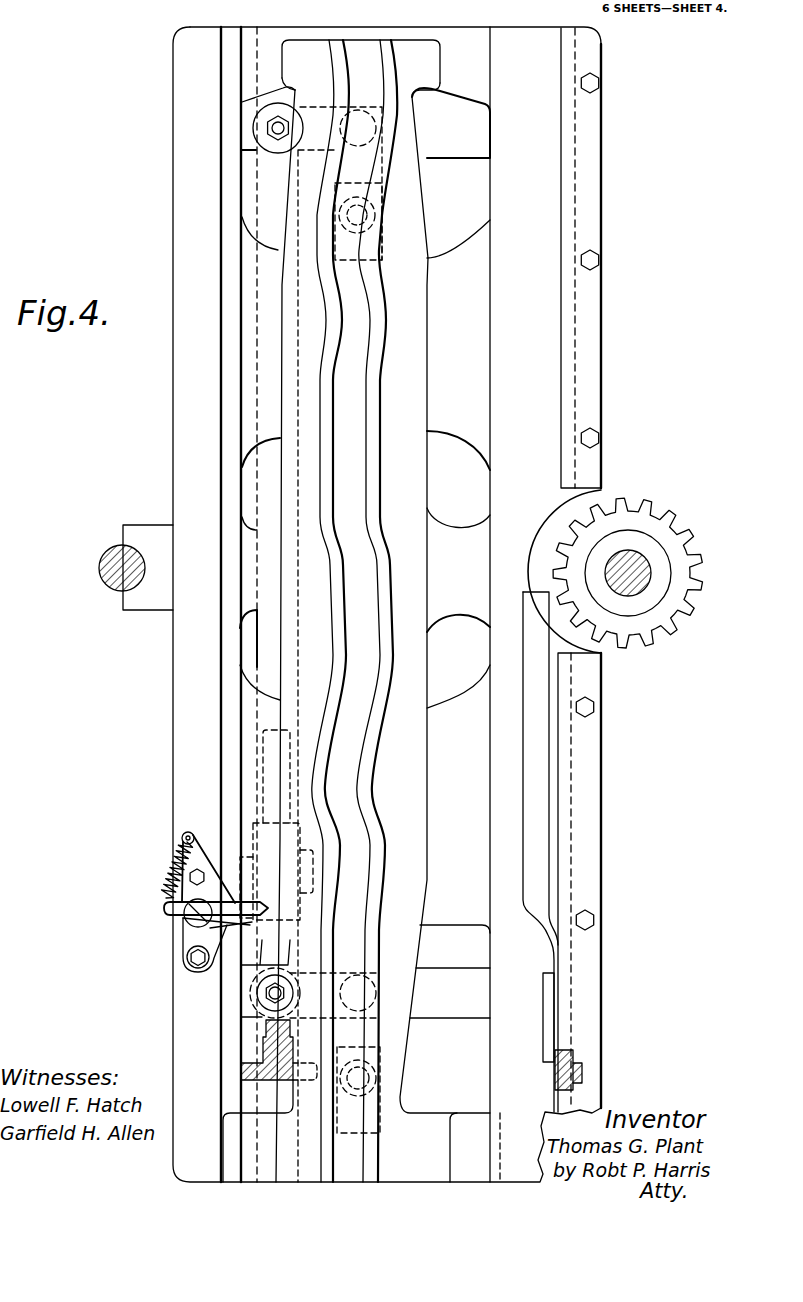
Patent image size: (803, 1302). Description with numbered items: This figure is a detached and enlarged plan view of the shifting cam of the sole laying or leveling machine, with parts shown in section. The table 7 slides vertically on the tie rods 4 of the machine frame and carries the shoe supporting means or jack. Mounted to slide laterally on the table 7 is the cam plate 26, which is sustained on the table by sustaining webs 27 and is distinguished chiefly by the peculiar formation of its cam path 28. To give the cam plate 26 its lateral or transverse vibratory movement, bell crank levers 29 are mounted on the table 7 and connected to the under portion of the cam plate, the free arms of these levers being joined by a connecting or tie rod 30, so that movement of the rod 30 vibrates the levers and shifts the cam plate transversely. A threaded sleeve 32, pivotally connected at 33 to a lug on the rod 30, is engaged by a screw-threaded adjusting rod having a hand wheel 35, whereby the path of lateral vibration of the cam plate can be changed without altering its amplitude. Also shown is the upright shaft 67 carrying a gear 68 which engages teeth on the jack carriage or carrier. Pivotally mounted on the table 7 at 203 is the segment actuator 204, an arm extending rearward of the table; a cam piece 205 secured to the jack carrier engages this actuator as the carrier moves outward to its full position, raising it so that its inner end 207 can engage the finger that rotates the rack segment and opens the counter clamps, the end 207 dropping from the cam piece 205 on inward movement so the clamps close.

The tie rod 4 is at (98, 565).
The table 7 is at (537, 372).
The cam plate 26 is at (417, 388).
The sustaining web 27 is at (468, 283).
The cam path 28 is at (364, 50).
The bell crank lever 29 is at (321, 107).
The connecting or tie rod 30 is at (263, 490).
The threaded sleeve 32 is at (263, 837).
The pivot connection 33 is at (237, 867).
The hand wheel 35 is at (240, 1067).
The upright shaft 67 is at (640, 570).
The gear 68 is at (623, 510).
The pivot 203 is at (580, 1073).
The segment actuator 204 is at (555, 993).
The cam piece 205 is at (545, 1040).
The inner end of segment actuator 207 is at (540, 607).